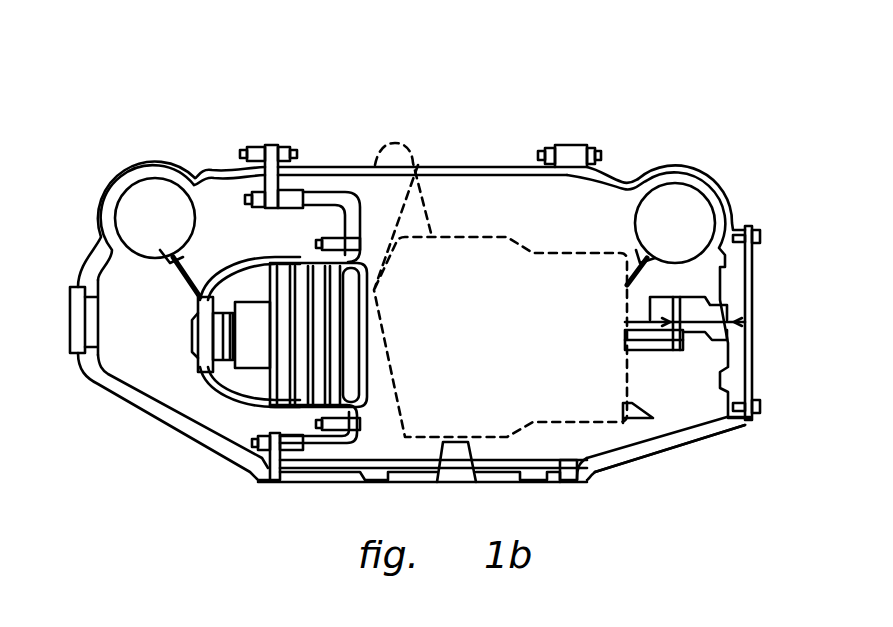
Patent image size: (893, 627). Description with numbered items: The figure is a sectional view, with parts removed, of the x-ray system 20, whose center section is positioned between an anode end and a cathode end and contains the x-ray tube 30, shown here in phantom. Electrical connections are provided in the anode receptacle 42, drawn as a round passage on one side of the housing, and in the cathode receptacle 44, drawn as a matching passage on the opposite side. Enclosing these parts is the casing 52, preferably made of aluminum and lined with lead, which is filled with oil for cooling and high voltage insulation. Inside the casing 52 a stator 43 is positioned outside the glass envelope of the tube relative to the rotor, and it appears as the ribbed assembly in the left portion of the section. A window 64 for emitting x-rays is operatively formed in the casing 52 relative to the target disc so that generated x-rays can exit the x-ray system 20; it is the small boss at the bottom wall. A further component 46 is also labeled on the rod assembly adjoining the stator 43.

The x-ray system 20 is at (508, 130).
The x-ray tube 30 is at (375, 148).
The anode receptacle 42 is at (153, 205).
The stator 43 is at (312, 362).
The cathode receptacle 44 is at (677, 205).
The piston rod assembly 46 is at (207, 370).
The casing 52 is at (667, 447).
The window 64 is at (453, 478).